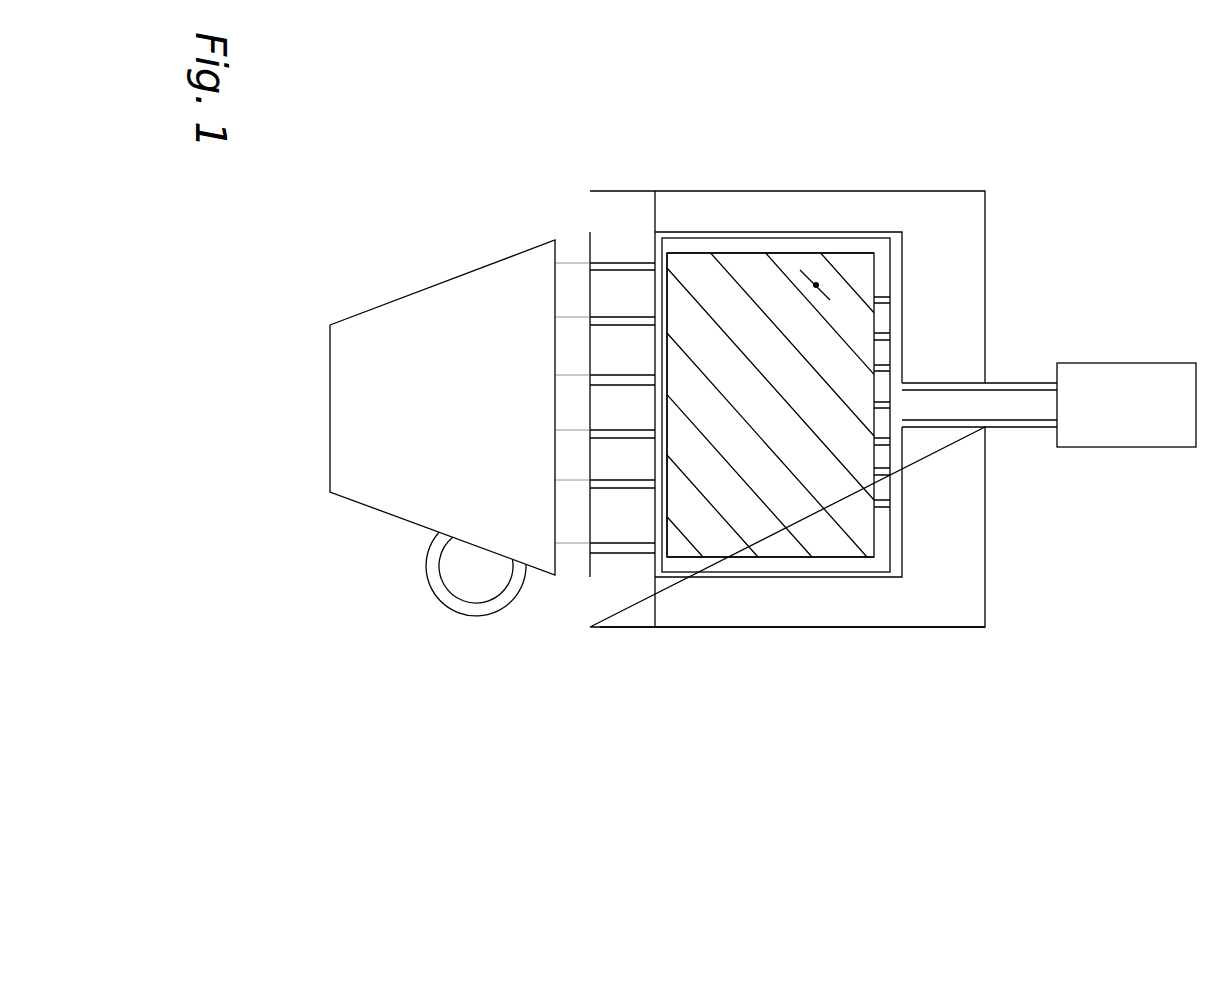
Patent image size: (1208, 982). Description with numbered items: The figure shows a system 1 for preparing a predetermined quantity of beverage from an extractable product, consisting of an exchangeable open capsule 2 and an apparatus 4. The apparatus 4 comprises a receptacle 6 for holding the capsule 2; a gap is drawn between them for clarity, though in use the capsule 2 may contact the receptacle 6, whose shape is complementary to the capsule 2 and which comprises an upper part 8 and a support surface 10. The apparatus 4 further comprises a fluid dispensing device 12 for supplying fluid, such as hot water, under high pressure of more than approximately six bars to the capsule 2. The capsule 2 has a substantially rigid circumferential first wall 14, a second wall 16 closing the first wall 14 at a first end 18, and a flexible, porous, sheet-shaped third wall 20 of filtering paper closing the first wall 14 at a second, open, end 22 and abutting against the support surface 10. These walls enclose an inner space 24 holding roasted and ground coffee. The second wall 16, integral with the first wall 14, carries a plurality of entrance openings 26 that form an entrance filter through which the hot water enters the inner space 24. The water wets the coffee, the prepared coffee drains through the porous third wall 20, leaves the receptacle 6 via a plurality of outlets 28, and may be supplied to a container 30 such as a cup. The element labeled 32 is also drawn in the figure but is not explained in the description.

The apparatus 1 is at (651, 803).
The capsule wall 2 is at (790, 565).
The supply line 4 is at (966, 732).
The wall element 6 is at (652, 567).
The housing bottom wall 8 is at (893, 627).
The housing 10 is at (843, 627).
The control unit 12 is at (1112, 447).
The inner wall 14 is at (752, 567).
The frame 16 is at (660, 520).
The filling material 18 is at (816, 285).
The spacer 20 is at (657, 320).
The insulating layer 22 is at (678, 567).
The electrode 24 is at (893, 367).
The connecting line 26 is at (530, 668).
The electrode segment 28 is at (600, 327).
The horn 30 is at (390, 518).
The cover 32 is at (744, 256).